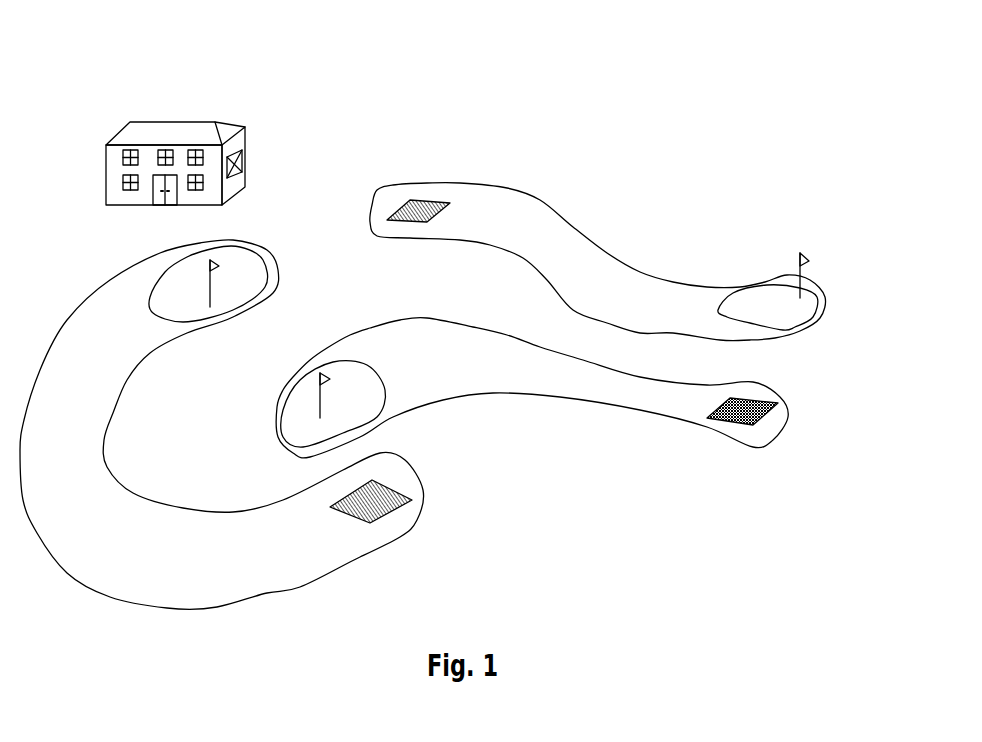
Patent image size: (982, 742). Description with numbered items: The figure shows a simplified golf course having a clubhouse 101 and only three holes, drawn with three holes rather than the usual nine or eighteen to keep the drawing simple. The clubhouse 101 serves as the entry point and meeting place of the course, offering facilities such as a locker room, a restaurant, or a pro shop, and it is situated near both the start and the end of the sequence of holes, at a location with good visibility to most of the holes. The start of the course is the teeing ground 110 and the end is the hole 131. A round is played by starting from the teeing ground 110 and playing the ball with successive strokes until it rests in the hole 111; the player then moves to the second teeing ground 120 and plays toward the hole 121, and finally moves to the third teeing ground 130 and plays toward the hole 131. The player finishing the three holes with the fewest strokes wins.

The clubhouse 101 is at (185, 120).
The teeing ground 110 is at (442, 200).
The hole 111 is at (799, 298).
The second teeing ground 120 is at (727, 422).
The hole 121 is at (322, 418).
The third teeing ground 130 is at (387, 515).
The hole 131 is at (210, 300).